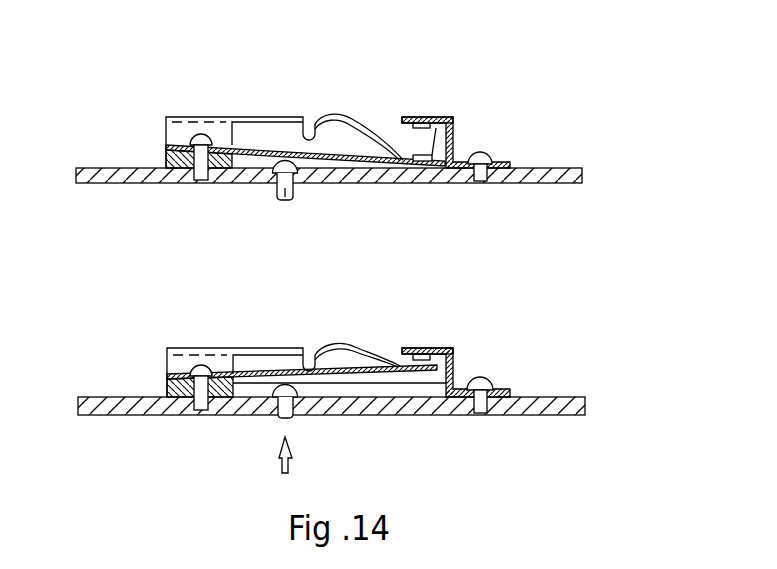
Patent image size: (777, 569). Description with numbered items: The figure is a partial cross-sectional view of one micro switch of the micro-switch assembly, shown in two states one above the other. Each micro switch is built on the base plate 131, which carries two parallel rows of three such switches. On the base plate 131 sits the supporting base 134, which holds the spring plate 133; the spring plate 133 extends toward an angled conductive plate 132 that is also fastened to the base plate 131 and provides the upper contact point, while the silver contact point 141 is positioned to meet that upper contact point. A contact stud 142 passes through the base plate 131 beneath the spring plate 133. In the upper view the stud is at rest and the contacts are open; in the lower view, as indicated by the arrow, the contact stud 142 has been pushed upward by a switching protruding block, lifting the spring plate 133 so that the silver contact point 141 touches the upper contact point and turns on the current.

The base plate 131 is at (552, 176).
The conductive plate 132 is at (455, 136).
The spring plate 133 is at (357, 158).
The supporting base 134 is at (271, 117).
The silver contact point 141 is at (425, 117).
The contact stud 142 is at (292, 201).